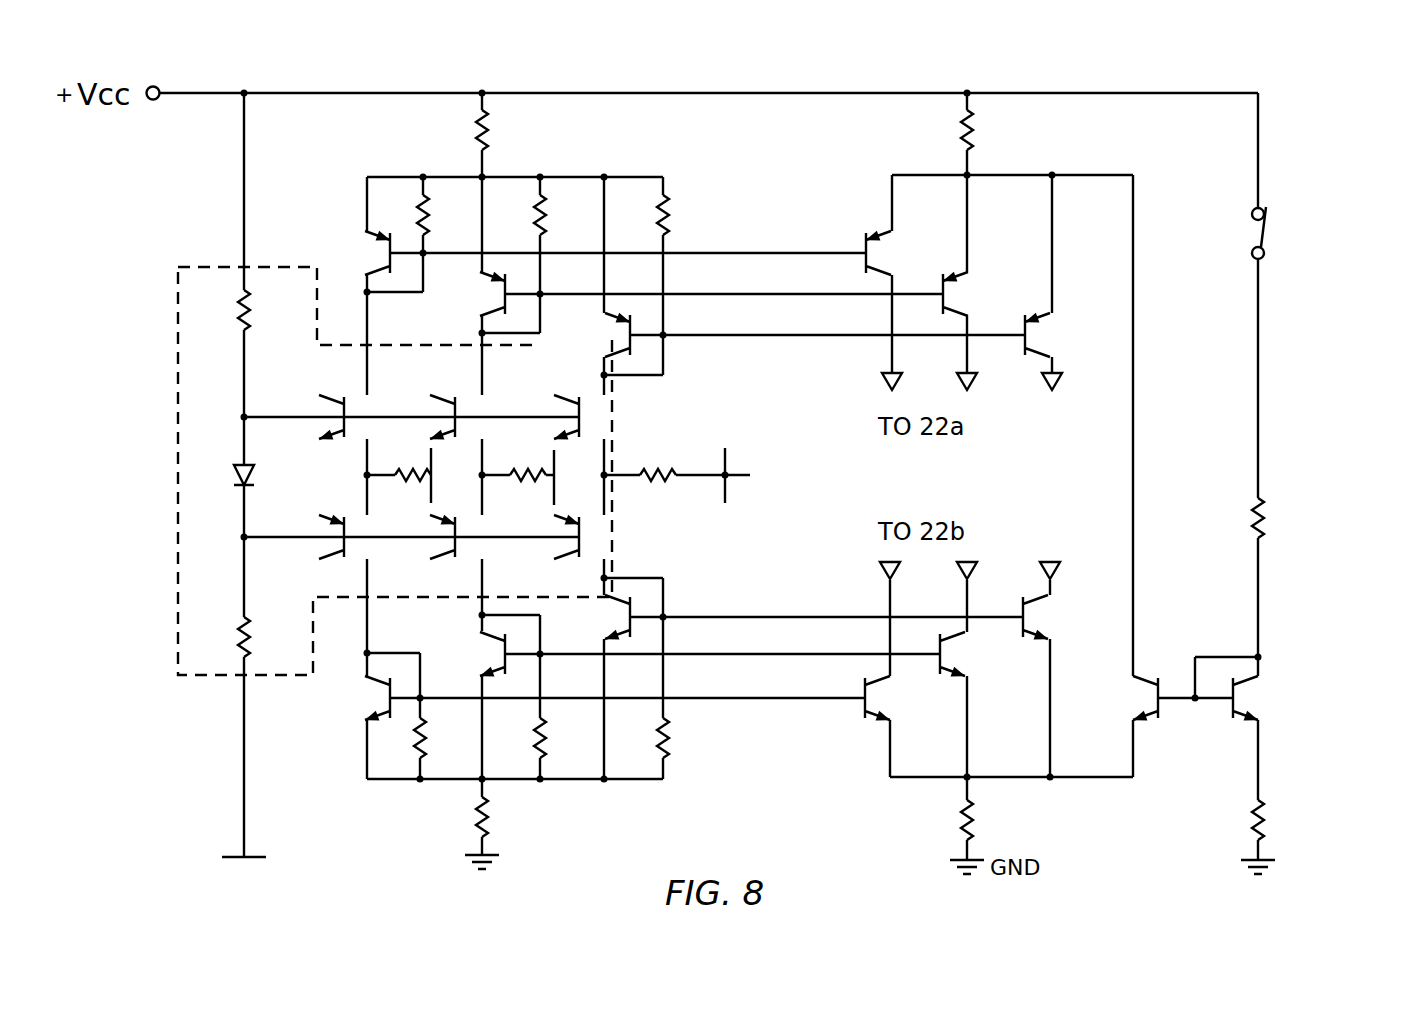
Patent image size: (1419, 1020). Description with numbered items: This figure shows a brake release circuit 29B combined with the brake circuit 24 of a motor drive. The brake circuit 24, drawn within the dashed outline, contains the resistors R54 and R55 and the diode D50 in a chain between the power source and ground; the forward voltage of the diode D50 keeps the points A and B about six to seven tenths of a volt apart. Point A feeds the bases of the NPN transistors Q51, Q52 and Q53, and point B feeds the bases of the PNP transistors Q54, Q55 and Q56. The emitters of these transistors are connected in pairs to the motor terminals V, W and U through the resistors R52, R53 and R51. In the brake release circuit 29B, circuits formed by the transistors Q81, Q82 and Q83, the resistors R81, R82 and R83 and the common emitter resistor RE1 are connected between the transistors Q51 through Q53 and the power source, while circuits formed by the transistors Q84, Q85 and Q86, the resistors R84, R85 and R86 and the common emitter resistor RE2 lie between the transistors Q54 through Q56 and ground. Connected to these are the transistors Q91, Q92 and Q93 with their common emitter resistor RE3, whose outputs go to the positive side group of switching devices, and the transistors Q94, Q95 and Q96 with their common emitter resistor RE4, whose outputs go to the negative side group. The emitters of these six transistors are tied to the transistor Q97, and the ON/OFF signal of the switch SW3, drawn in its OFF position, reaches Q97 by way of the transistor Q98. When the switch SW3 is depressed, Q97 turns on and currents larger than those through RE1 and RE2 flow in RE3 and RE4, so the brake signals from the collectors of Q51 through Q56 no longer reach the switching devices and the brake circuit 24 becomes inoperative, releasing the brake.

The brake circuit 24 is at (276, 265).
The brake release circuit 29B is at (1038, 78).
The resistor R54 is at (274, 311).
The resistor R55 is at (274, 639).
The diode D50 is at (274, 475).
The point A is at (213, 420).
The point B is at (213, 540).
The common emitter resistor RE1 is at (451, 132).
The common emitter resistor RE2 is at (451, 822).
The common emitter resistor RE3 is at (936, 132).
The common emitter resistor RE4 is at (933, 823).
The resistor R81 is at (692, 215).
The resistor R82 is at (451, 215).
The resistor R83 is at (568, 215).
The resistor R84 is at (692, 740).
The resistor R85 is at (449, 740).
The resistor R86 is at (569, 740).
The resistor R51 is at (667, 498).
The resistor R52 is at (401, 498).
The resistor R53 is at (519, 498).
The V terminal V is at (445, 479).
The W terminal W is at (573, 479).
The U terminal U is at (773, 479).
The transistor Q81 is at (588, 335).
The transistor Q82 is at (359, 253).
The transistor Q83 is at (468, 294).
The transistor Q84 is at (590, 617).
The transistor Q85 is at (397, 672).
The transistor Q86 is at (467, 657).
The NPN transistor Q51 is at (569, 403).
The NPN transistor Q52 is at (376, 413).
The NPN transistor Q53 is at (486, 413).
The PNP transistor Q54 is at (547, 550).
The PNP transistor Q55 is at (308, 550).
The PNP transistor Q56 is at (423, 550).
The transistor Q91 is at (1065, 335).
The transistor Q92 is at (908, 253).
The transistor Q93 is at (983, 294).
The transistor Q94 is at (1060, 617).
The transistor Q95 is at (900, 698).
The transistor Q96 is at (978, 654).
The transistor Q97 is at (1120, 698).
The transistor Q98 is at (1269, 699).
The switch SW3 is at (1228, 523).
The switch off position OFF is at (1282, 236).